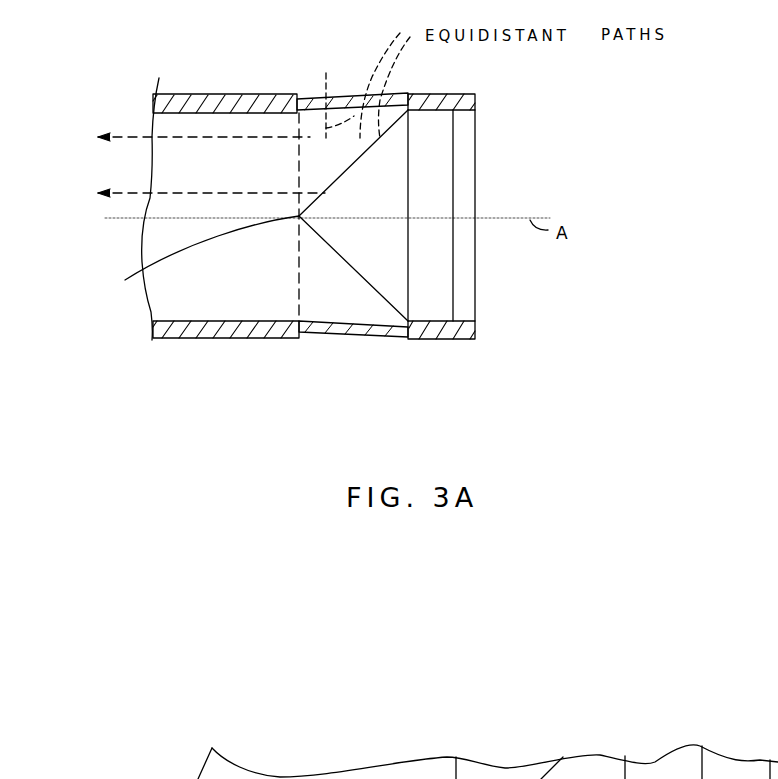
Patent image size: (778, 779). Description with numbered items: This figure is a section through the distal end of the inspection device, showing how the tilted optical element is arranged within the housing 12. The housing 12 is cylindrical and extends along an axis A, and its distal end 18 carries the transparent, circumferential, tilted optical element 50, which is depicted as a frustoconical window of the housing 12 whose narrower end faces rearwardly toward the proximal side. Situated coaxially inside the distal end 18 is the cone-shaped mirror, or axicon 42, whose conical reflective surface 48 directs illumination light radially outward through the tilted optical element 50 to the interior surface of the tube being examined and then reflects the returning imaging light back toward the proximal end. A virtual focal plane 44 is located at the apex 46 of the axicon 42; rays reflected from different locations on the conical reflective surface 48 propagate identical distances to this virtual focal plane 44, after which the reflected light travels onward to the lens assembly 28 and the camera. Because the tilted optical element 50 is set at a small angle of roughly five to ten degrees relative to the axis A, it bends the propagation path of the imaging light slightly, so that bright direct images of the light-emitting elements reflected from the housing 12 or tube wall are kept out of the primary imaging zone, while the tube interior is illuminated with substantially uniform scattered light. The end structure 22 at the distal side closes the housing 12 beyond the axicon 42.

The housing 12 is at (213, 340).
The distal end 18 is at (398, 358).
The end cap section 22 is at (470, 192).
The lens assembly 28 is at (176, 177).
The cone-shaped mirror 42 is at (380, 231).
The virtual focal plane 44 is at (273, 345).
The apex 46 is at (190, 260).
The conical reflective surface 48 is at (362, 277).
The tilted optical element 50 is at (343, 97).